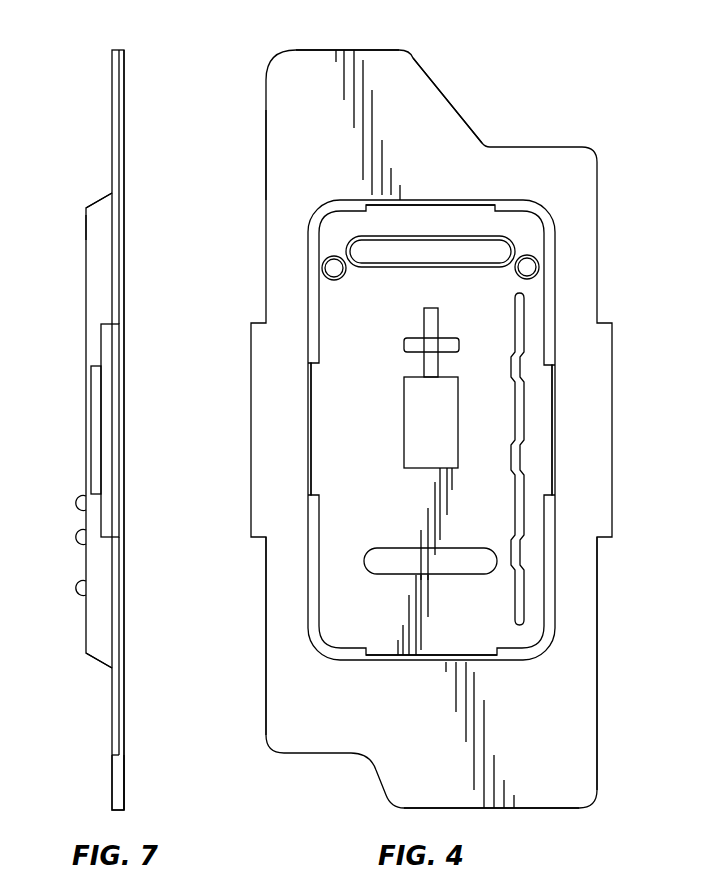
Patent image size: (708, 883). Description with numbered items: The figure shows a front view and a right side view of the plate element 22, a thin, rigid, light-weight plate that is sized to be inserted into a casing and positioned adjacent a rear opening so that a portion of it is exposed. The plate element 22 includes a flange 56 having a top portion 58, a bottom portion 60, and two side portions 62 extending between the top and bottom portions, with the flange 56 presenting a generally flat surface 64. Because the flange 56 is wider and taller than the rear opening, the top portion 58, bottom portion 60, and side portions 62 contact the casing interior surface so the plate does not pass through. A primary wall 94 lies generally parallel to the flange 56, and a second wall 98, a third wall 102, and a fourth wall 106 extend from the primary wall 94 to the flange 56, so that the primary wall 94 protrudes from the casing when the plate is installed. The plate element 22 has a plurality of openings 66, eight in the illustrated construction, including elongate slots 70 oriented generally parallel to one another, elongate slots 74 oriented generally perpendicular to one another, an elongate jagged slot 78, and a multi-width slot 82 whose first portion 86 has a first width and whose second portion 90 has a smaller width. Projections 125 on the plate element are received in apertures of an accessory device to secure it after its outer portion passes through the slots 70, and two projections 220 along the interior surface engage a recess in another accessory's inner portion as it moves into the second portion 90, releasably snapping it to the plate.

In FIG. 7, the plate element 22 is at (92, 68).
In FIG. 4, the plate element 22 is at (598, 135).
In FIG. 4, the flange 56 is at (286, 106).
In FIG. 7, the top portion 58 is at (124, 104).
In FIG. 4, the top portion 58 is at (398, 65).
In FIG. 4, the bottom portion 60 is at (565, 790).
In FIG. 7, the side portions 62 is at (124, 786).
In FIG. 4, the side portions 62 is at (578, 575).
In FIG. 4, the flat surface 64 is at (301, 80).
In FIG. 7, the openings 66 is at (90, 430).
In FIG. 4, the openings 66 is at (449, 348).
In FIG. 4, the elongate slots 70 is at (458, 257).
In FIG. 7, the elongate slots 74 is at (95, 386).
In FIG. 4, the elongate slots 74 is at (303, 392).
In FIG. 4, the jagged slot 78 is at (520, 415).
In FIG. 4, the multi-width slot 82 is at (409, 348).
In FIG. 4, the first portion 86 is at (428, 452).
In FIG. 4, the second portion 90 is at (429, 322).
In FIG. 7, the primary wall 94 is at (86, 268).
In FIG. 4, the primary wall 94 is at (340, 232).
In FIG. 7, the second wall 98 is at (103, 193).
In FIG. 7, the third wall 102 is at (100, 668).
In FIG. 7, the fourth wall 106 is at (98, 232).
In FIG. 4, the projections 125 is at (334, 268).
In FIG. 4, the projections 220 is at (424, 425).